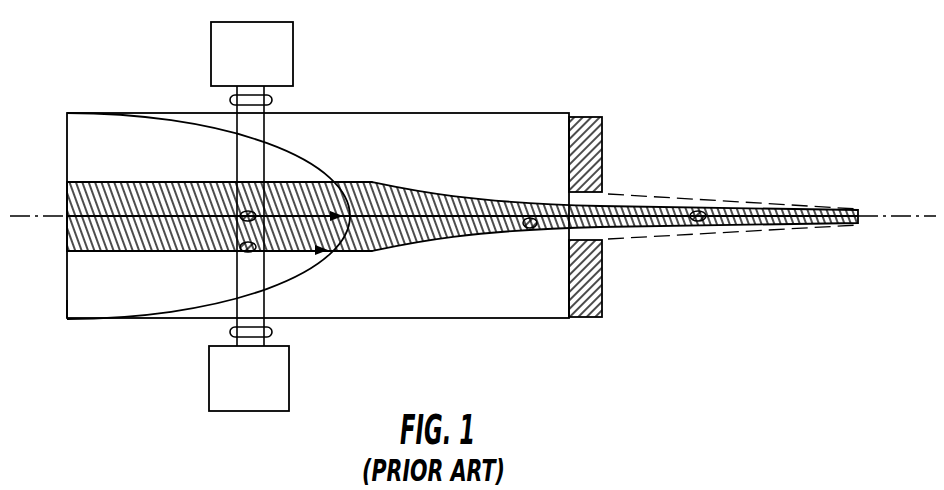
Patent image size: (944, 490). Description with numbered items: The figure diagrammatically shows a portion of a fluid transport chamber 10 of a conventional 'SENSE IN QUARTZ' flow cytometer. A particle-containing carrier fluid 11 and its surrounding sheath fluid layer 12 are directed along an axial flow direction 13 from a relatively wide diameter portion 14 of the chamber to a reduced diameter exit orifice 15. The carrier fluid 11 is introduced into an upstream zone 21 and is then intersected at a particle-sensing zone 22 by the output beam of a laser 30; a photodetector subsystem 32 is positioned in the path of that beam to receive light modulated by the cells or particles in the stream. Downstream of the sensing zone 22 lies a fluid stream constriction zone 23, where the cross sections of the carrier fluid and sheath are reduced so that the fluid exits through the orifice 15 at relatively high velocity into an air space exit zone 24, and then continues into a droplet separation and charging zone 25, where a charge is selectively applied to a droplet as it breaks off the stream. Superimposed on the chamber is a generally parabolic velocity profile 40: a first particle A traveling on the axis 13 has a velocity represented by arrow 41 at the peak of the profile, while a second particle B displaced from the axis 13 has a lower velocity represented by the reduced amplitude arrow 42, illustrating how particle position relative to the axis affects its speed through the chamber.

The fluid transport chamber 10 is at (447, 113).
The particle-containing carrier fluid 11 is at (203, 182).
The sheath fluid layer 12 is at (622, 238).
The axial flow direction 13 is at (29, 216).
The relatively wide diameter portion 14 is at (80, 312).
The reduced diameter exit orifice 15 is at (603, 196).
The upstream zone 21 is at (130, 287).
The particle-sensing zone 22 is at (251, 216).
The fluid stream constriction zone 23 is at (461, 295).
The air space exit zone 24 is at (646, 320).
The droplet separation and charging zone 25 is at (831, 320).
The laser 30 is at (290, 382).
The photodetector subsystem 32 is at (293, 32).
The velocity profile 40 is at (293, 156).
The velocity vector arrow 41 is at (323, 214).
The reduced amplitude velocity vector arrow 42 is at (302, 252).
The first particle A is at (252, 213).
The second particle B is at (242, 252).